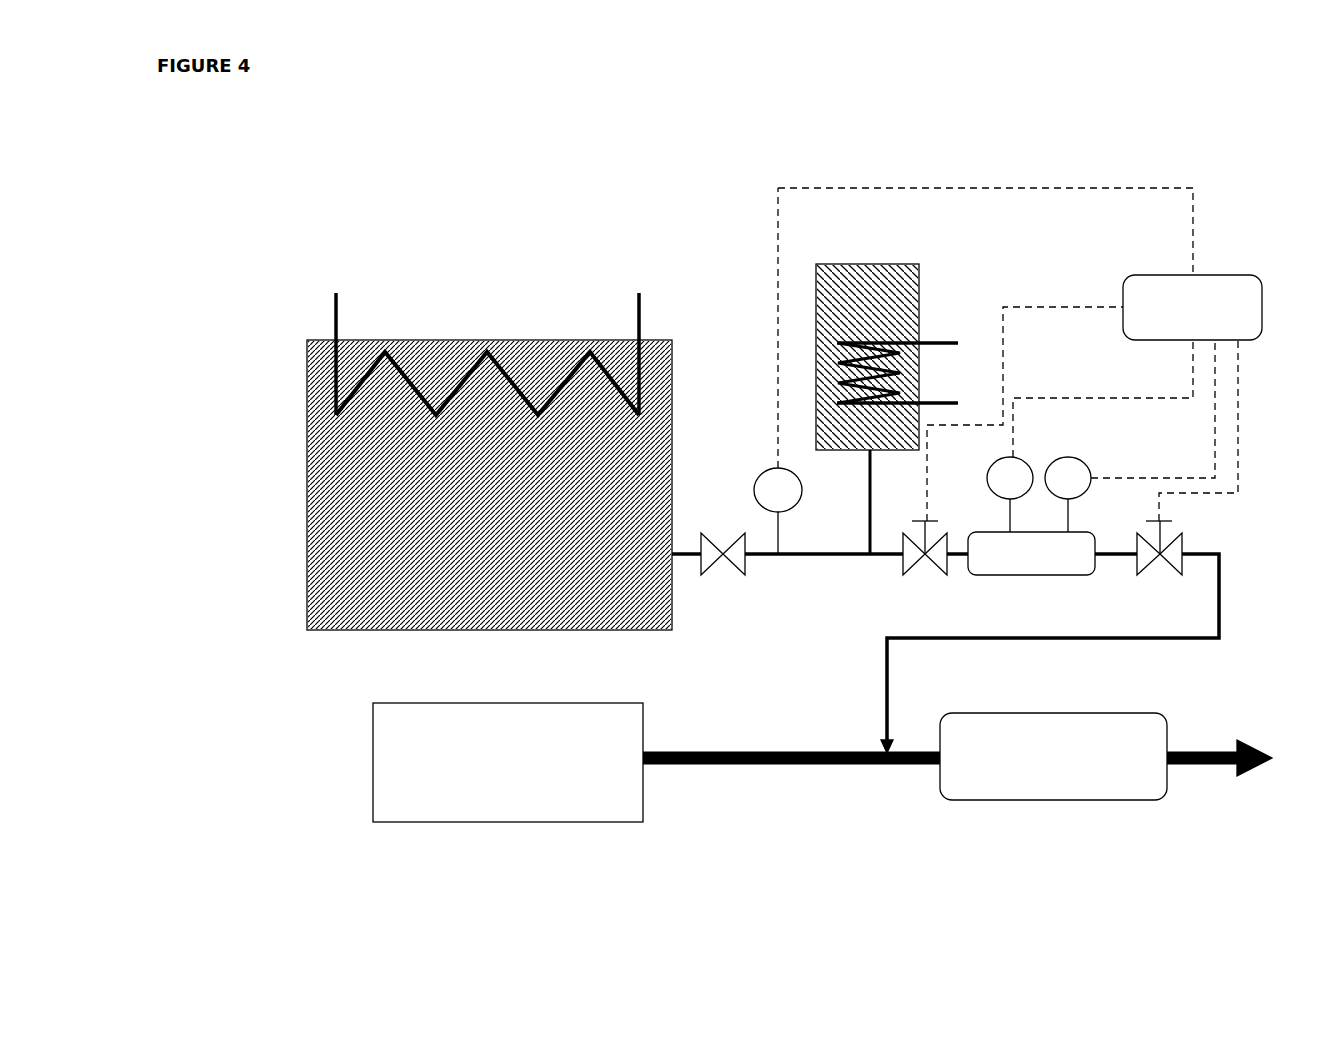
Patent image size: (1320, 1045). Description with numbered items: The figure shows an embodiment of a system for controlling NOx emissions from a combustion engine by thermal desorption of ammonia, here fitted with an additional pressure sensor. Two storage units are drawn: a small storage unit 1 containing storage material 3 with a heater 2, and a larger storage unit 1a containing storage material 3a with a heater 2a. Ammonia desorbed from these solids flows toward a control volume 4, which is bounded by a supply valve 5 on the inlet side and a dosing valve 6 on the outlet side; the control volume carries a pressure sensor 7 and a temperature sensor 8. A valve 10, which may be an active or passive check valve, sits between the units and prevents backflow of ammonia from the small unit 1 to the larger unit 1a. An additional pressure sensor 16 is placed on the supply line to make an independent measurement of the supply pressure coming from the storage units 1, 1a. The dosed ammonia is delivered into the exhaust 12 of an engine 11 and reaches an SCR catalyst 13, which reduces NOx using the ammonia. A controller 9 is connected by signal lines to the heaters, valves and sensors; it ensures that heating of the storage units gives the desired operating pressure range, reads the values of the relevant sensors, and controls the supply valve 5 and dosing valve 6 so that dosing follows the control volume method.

The storage unit 1 is at (857, 259).
The storage unit 1a is at (527, 334).
The heater 2 is at (938, 396).
The heater 2a is at (344, 316).
The storage material 3 is at (867, 357).
The storage material 3a is at (489, 485).
The control volume 4 is at (1031, 553).
The supply valve 5 is at (1013, 452).
The dosing valve 6 is at (1186, 468).
The pressure sensor 7 is at (1090, 436).
The temperature sensor 8 is at (1130, 436).
The controller 9 is at (1020, 264).
The valve 10 is at (732, 565).
The engine 11 is at (508, 762).
The exhaust 12 is at (791, 741).
The SCR catalyst 13 is at (1106, 756).
The pressure sensor 16 is at (778, 371).